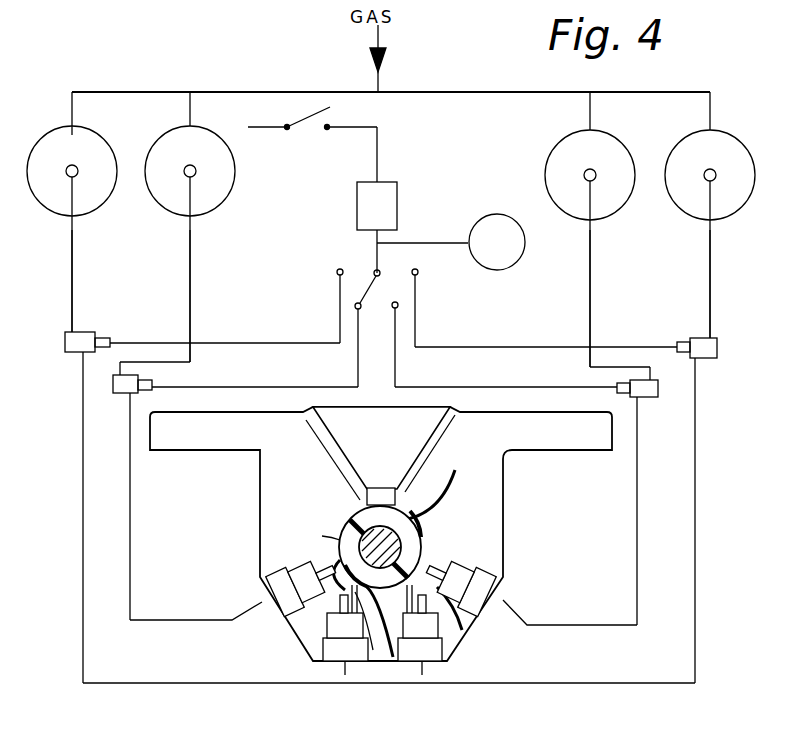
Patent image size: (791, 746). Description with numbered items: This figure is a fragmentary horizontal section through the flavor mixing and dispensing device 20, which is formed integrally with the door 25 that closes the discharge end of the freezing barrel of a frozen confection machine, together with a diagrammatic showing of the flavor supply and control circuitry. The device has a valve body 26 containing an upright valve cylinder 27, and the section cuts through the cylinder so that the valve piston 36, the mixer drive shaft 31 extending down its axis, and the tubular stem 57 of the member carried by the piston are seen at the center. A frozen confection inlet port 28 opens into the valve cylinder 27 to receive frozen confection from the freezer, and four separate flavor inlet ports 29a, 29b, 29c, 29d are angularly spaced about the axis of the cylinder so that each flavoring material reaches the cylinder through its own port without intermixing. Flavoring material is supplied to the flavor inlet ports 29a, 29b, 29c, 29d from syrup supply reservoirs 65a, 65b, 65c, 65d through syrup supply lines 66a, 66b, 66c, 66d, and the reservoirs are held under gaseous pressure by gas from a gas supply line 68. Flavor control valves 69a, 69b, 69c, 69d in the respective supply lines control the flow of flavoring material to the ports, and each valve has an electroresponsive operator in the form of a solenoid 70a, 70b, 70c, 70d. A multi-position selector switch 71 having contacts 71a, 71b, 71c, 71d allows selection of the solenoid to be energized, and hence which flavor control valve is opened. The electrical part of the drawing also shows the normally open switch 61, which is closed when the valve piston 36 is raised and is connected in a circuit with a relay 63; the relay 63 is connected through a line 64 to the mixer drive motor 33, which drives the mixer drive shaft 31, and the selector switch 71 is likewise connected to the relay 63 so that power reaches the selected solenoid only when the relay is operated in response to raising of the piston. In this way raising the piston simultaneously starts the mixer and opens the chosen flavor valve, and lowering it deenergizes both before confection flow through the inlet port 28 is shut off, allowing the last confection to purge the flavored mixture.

The flavor mixing and dispensing device 20 is at (360, 670).
The door 25 is at (608, 450).
The valve body 26 is at (505, 555).
The valve cylinder 27 is at (432, 500).
The frozen confection inlet port 28 is at (380, 490).
The flavor inlet port 29a is at (445, 565).
The flavor inlet port 29b is at (450, 630).
The flavor inlet port 29c is at (390, 665).
The flavor inlet port 29d is at (290, 620).
The mixer drive shaft 31 is at (420, 538).
The mixer drive motor 33 is at (505, 268).
The valve piston 36 is at (352, 520).
The tubular stem 57 is at (317, 533).
The switch 61 is at (305, 137).
The relay 63 is at (397, 200).
The line 64 is at (425, 243).
The syrup supply reservoir 65a is at (605, 210).
The syrup supply reservoir 65b is at (722, 205).
The syrup supply reservoir 65c is at (92, 205).
The syrup supply reservoir 65d is at (215, 200).
The syrup supply line 66a is at (592, 285).
The syrup supply line 66b is at (712, 292).
The syrup supply line 66c is at (74, 268).
The syrup supply line 66d is at (192, 262).
The gas supply line 68 is at (268, 92).
The flavor control valve 69a is at (650, 397).
The flavor control valve 69b is at (703, 360).
The flavor control valve 69c is at (80, 332).
The flavor control valve 69d is at (125, 395).
The solenoid 70a is at (617, 383).
The solenoid 70b is at (690, 340).
The solenoid 70c is at (105, 336).
The solenoid 70d is at (152, 383).
The multi-position selector switch 71 is at (372, 268).
The contact 71a is at (398, 305).
The contact 71b is at (418, 272).
The contact 71c is at (336, 276).
The contact 71d is at (354, 308).